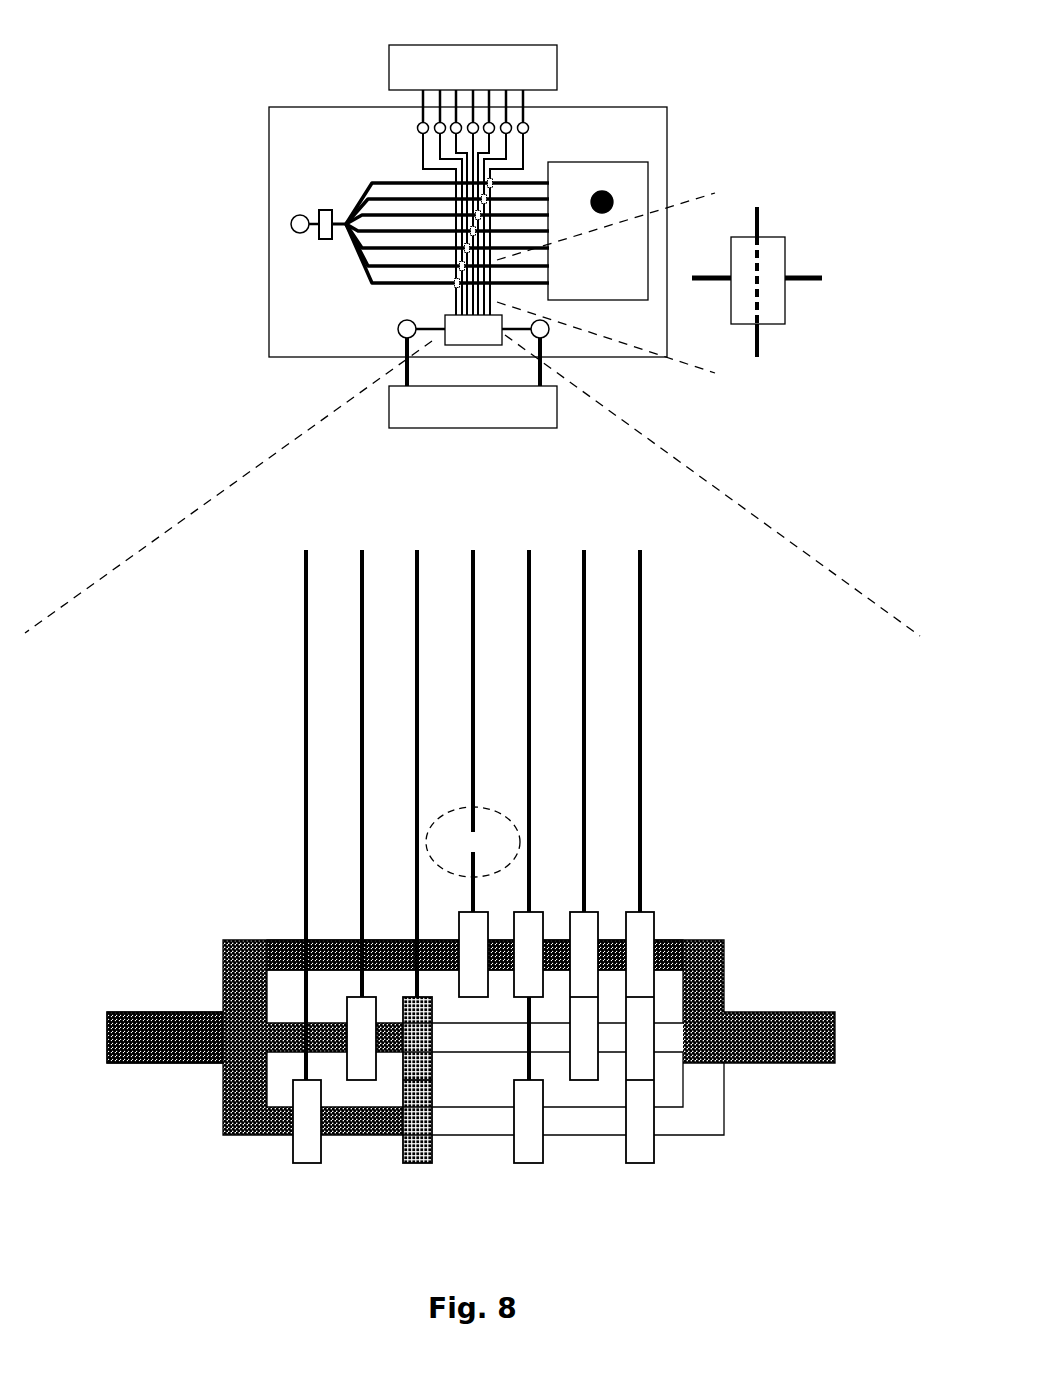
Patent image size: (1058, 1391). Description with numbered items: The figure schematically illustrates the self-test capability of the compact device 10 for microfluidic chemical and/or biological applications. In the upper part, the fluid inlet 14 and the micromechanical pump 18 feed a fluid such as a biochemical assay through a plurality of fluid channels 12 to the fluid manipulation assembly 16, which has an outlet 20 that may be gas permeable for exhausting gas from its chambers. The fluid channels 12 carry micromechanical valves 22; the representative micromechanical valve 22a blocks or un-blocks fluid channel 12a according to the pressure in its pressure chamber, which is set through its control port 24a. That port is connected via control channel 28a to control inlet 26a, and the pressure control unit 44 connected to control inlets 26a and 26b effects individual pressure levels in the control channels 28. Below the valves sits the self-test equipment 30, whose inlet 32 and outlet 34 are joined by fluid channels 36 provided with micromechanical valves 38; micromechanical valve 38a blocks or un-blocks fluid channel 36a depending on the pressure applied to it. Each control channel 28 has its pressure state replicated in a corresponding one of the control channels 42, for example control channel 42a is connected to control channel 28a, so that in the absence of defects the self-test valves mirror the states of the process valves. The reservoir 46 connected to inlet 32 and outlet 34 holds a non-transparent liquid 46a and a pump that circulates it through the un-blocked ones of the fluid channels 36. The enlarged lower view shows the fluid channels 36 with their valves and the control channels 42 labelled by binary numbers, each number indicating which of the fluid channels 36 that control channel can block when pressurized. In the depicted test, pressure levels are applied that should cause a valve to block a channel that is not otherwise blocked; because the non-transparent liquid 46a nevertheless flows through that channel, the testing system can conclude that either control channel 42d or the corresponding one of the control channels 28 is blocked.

The device 10 is at (678, 30).
The fluid channels 12 is at (348, 288).
The fluid channel 12a is at (788, 280).
The fluid inlet 14 is at (296, 233).
The fluid manipulation assembly 16 is at (610, 288).
The micromechanical pump 18 is at (317, 212).
The outlet 20 is at (609, 195).
The micromechanical valves 22 is at (435, 298).
The micromechanical valve 22a is at (786, 302).
The control port 24a is at (798, 205).
The control inlet 26a is at (415, 122).
The control inlet 26b is at (538, 120).
The control channels 28 is at (390, 164).
The control channel 28a is at (762, 210).
The self-test equipment 30 is at (485, 341).
The inlet 32 is at (400, 338).
The outlet 34 is at (547, 338).
The fluid channels 36 is at (355, 1220).
The fluid channel 36a is at (708, 896).
The micromechanical valves 38 is at (712, 1232).
The micromechanical valve 38a is at (300, 1168).
The control channels 42 is at (686, 688).
The control channel 42a is at (306, 800).
The control channel 42d is at (473, 551).
The pressure control unit 44 is at (485, 81).
The reservoir 46 is at (485, 418).
The non-transparent liquid 46a is at (238, 982).